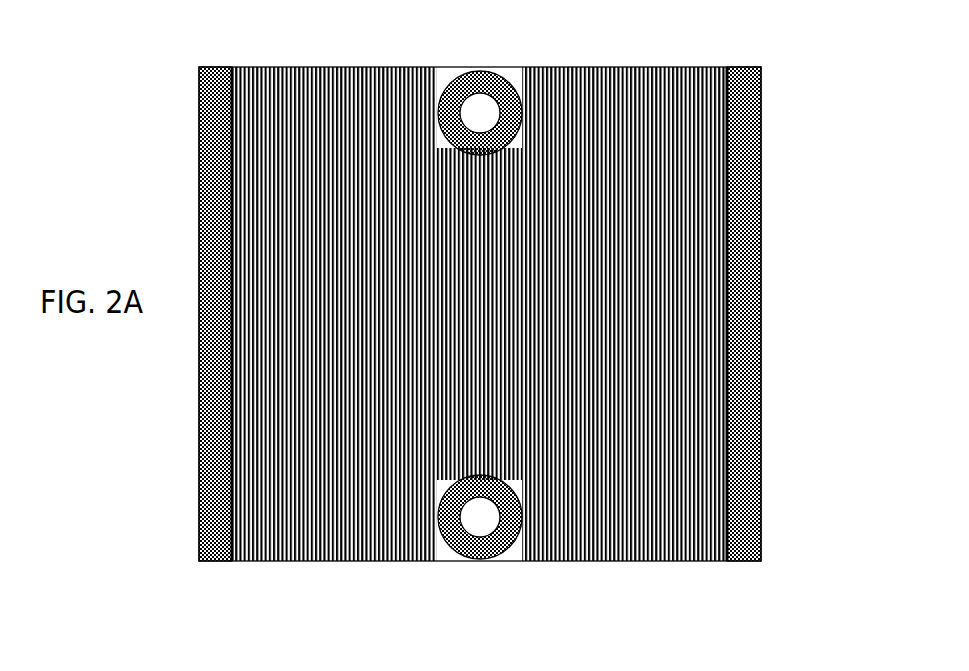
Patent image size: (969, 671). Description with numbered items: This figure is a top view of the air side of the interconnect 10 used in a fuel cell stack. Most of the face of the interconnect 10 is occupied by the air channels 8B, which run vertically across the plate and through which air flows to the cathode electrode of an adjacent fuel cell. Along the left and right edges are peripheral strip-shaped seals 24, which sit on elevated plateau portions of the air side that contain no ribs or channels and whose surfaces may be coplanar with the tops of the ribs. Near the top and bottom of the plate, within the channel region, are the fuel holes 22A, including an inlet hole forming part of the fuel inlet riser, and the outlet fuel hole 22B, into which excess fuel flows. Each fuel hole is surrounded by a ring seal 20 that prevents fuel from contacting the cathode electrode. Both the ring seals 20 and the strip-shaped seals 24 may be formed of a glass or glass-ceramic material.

The interconnect 10 is at (172, 223).
The air channels 8B is at (647, 407).
The peripheral strip-shaped seals 24 is at (757, 300).
The fuel holes 22A is at (479, 90).
The outlet fuel hole 22B is at (475, 538).
The ring seals 20 is at (450, 547).